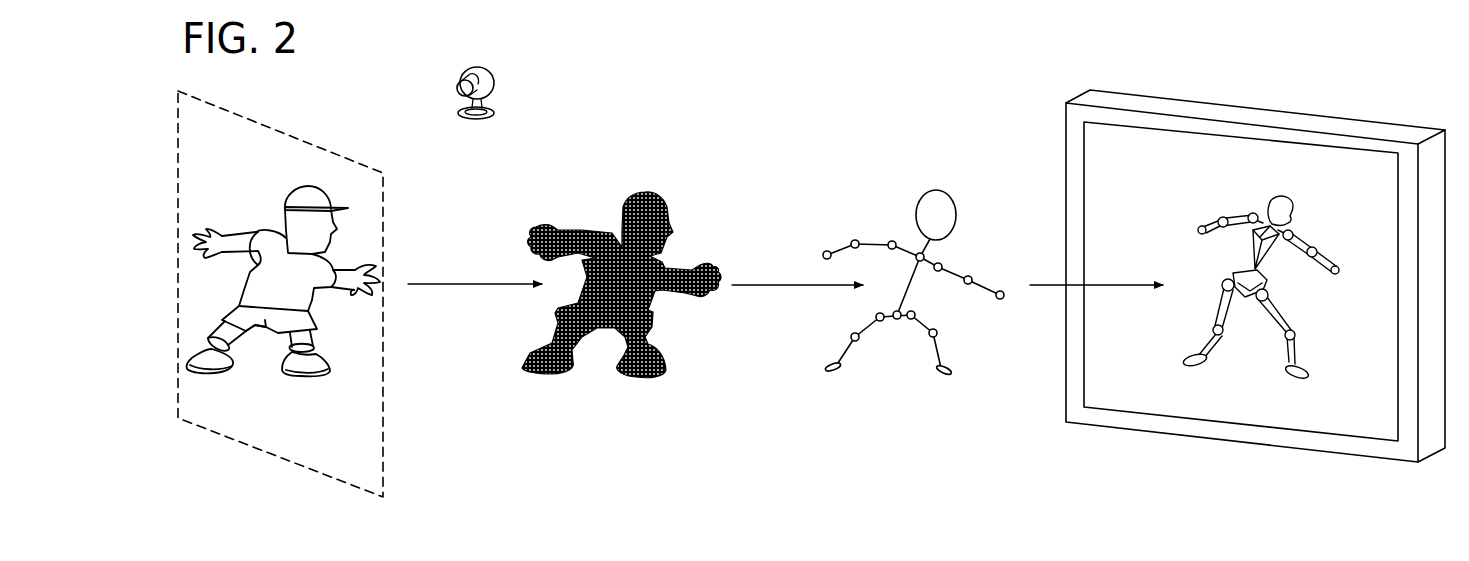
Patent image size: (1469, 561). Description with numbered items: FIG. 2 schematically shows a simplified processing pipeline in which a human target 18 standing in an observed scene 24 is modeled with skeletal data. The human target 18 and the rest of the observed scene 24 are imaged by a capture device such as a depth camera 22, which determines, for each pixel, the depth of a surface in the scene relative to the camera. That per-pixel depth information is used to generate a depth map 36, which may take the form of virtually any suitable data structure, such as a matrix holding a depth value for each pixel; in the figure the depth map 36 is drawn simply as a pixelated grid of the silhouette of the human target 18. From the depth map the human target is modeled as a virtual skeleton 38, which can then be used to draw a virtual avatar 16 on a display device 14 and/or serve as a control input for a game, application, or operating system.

The display device 14 is at (1373, 339).
The virtual avatar 16 is at (1277, 195).
The human target 18 is at (291, 292).
The depth camera 22 is at (493, 72).
The observed scene 24 is at (232, 153).
The depth map 36 is at (630, 193).
The virtual skeleton 38 is at (948, 225).